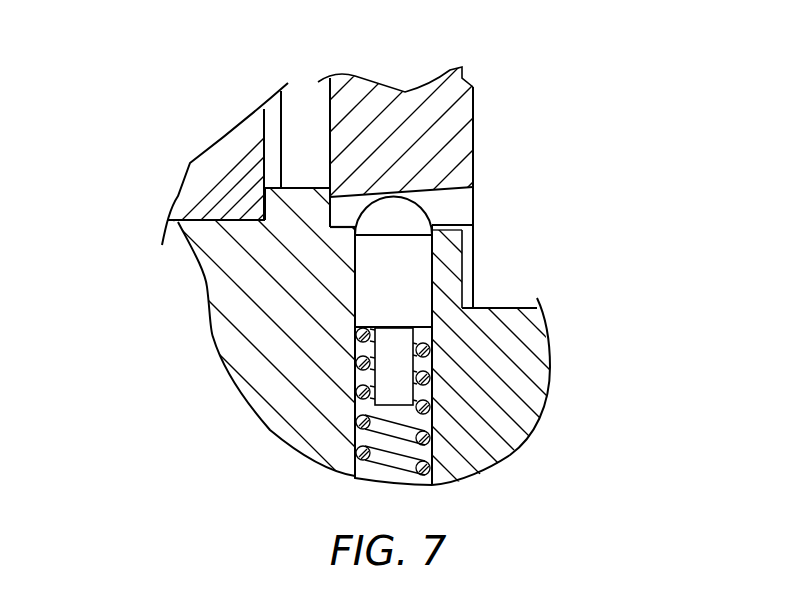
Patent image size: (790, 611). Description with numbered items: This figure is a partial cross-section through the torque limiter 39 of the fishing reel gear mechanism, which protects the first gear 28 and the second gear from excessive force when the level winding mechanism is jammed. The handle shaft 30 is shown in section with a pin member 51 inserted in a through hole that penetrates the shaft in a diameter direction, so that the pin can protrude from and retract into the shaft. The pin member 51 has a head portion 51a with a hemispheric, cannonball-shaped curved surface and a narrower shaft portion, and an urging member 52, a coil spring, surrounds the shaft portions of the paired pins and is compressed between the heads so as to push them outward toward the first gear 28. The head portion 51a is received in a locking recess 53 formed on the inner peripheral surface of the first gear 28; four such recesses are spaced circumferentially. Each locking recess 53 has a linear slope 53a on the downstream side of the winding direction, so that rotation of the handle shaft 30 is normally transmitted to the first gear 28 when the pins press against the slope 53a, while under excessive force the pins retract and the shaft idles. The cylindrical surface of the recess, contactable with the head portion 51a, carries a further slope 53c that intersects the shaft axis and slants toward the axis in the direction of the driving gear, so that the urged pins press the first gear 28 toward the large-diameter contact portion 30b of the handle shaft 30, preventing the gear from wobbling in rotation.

The first gear 28 is at (467, 78).
The handle shaft 30 is at (216, 244).
The contact portion 30b is at (303, 190).
The torque limiter 39 is at (475, 305).
The pin member 51 is at (449, 201).
The head portion 51a is at (417, 258).
The urging member 52 is at (431, 378).
The locking recess 53 is at (275, 302).
The slope 53a is at (350, 208).
The slope 53c is at (420, 192).